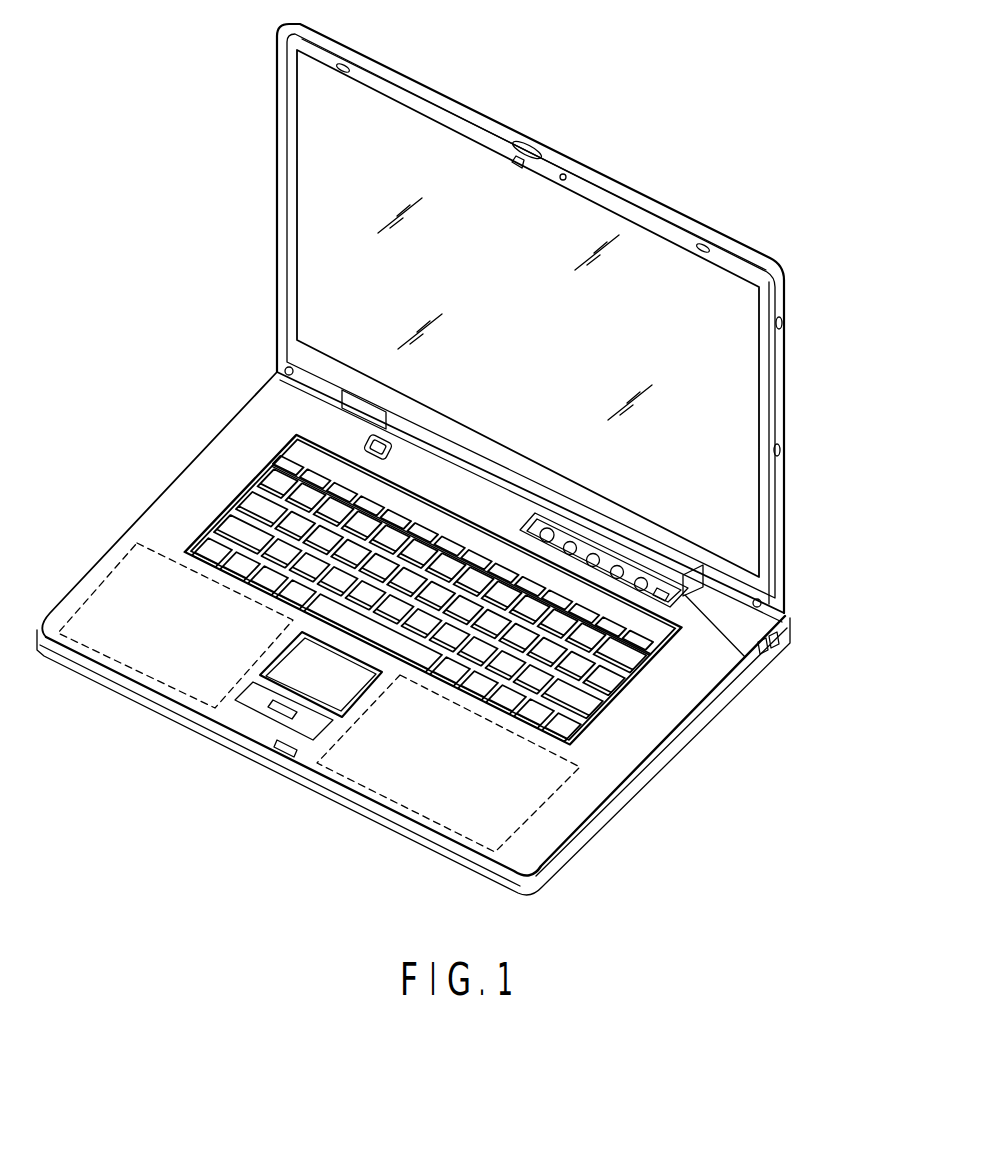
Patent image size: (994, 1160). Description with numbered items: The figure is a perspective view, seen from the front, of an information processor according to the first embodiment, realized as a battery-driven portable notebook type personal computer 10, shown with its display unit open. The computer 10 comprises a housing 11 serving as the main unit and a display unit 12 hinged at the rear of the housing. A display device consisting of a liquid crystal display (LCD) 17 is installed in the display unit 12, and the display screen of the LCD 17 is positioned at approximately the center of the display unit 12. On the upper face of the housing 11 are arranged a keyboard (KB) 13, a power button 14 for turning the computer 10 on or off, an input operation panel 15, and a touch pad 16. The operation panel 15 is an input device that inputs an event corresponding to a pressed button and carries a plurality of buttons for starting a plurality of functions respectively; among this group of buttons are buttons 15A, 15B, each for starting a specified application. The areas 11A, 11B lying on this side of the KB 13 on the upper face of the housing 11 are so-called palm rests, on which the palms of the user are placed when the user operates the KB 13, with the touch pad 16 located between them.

The computer 10 is at (445, 463).
The housing 11 is at (436, 626).
The palm rest area 11A is at (405, 808).
The palm rest area 11B is at (130, 663).
The display unit 12 is at (565, 318).
The keyboard 13 is at (590, 678).
The power button 14 is at (373, 440).
The input operation panel 15 is at (678, 522).
The button 15A is at (547, 528).
The button 15B is at (572, 543).
The touch pad 16 is at (293, 672).
The liquid crystal display 17 is at (705, 331).